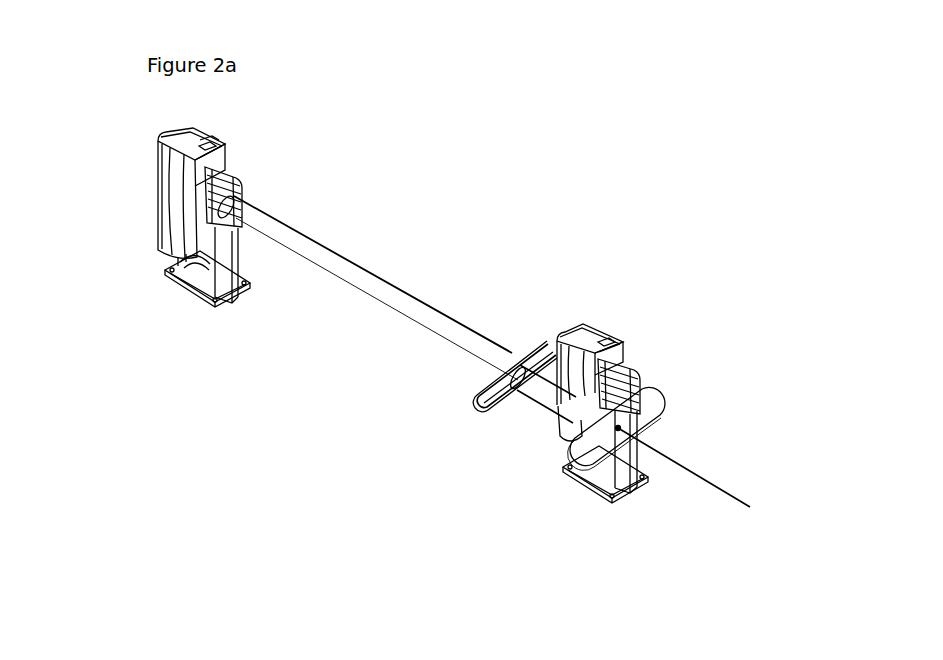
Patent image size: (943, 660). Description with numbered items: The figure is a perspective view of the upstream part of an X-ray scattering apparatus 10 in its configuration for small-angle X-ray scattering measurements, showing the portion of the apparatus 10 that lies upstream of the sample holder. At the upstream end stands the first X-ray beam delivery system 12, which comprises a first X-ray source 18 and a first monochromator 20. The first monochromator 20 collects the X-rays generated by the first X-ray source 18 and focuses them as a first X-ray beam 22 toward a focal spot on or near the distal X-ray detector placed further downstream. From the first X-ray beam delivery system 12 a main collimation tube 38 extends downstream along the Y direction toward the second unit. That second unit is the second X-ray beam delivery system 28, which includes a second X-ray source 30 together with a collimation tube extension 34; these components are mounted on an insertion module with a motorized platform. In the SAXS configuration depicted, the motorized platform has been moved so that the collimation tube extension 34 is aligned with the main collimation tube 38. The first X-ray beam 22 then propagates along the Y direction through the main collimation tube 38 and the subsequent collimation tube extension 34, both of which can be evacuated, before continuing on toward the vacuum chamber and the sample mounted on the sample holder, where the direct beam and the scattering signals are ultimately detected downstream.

The X-ray scattering apparatus 10 is at (467, 116).
The first X-ray beam delivery system 12 is at (184, 334).
The first X-ray source 18 is at (177, 207).
The first monochromator 20 is at (237, 195).
The first X-ray beam 22 is at (715, 487).
The second X-ray beam delivery system 28 is at (700, 236).
The second X-ray source 30 is at (586, 332).
The collimation tube extension 34 is at (567, 403).
The main collimation tube 38 is at (357, 278).